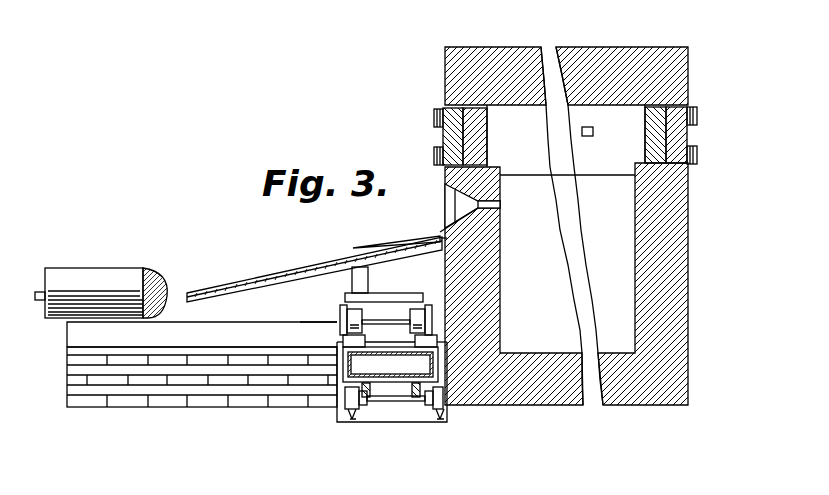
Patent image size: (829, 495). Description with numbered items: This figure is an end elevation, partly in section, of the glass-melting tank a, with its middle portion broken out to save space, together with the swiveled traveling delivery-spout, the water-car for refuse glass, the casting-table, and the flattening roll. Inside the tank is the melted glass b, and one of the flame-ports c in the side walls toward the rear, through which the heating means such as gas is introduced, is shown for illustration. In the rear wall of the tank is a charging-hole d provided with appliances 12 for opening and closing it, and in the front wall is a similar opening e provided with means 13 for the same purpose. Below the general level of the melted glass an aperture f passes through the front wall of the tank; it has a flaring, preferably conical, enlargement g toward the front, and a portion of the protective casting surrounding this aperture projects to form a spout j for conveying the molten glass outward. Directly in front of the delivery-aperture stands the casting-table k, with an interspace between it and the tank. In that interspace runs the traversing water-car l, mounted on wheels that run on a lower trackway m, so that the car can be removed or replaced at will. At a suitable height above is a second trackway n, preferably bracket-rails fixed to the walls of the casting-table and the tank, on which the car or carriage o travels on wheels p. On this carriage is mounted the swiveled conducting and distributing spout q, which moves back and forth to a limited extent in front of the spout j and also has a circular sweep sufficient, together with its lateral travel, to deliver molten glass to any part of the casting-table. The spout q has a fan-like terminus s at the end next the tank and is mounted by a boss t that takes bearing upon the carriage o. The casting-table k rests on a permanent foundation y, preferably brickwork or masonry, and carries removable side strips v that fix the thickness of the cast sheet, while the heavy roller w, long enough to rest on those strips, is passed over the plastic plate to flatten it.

The glass-melting tank a is at (577, 226).
The melted glass b is at (567, 264).
The flame-port c is at (593, 127).
The charging-hole d is at (610, 140).
The opening in the front wall e is at (517, 140).
The aperture f is at (497, 205).
The flaring enlargement g is at (445, 190).
The spout j is at (428, 259).
The casting-table k is at (314, 334).
The traversing water-car l is at (392, 382).
The trackway m is at (392, 412).
The second trackway n is at (390, 340).
The car or carriage o is at (384, 287).
The wheels p is at (382, 309).
The swiveled conducting and distributing spout q is at (314, 269).
The fan-like terminus s is at (396, 228).
The boss t is at (352, 284).
The side strips v is at (67, 323).
The heavy roller w is at (101, 293).
The permanent foundation y is at (190, 377).
The appliances for opening and closing 12 is at (682, 125).
The means for opening and closing 13 is at (448, 131).